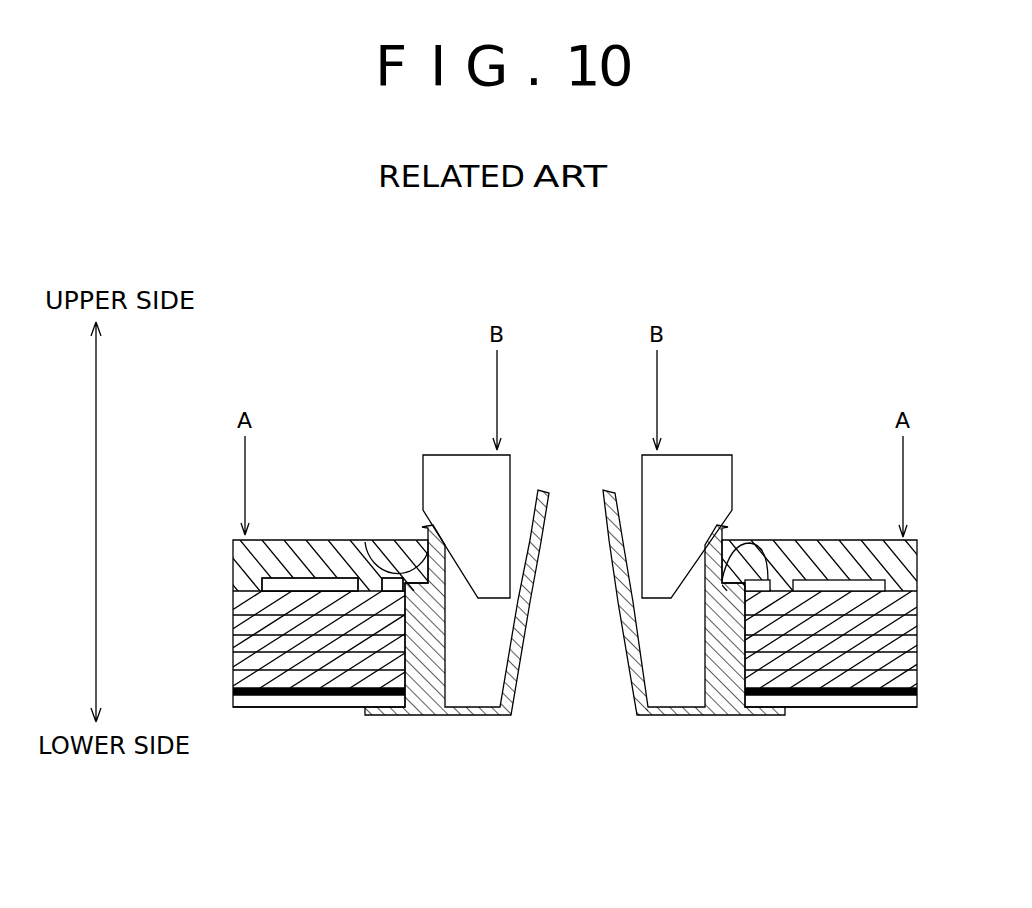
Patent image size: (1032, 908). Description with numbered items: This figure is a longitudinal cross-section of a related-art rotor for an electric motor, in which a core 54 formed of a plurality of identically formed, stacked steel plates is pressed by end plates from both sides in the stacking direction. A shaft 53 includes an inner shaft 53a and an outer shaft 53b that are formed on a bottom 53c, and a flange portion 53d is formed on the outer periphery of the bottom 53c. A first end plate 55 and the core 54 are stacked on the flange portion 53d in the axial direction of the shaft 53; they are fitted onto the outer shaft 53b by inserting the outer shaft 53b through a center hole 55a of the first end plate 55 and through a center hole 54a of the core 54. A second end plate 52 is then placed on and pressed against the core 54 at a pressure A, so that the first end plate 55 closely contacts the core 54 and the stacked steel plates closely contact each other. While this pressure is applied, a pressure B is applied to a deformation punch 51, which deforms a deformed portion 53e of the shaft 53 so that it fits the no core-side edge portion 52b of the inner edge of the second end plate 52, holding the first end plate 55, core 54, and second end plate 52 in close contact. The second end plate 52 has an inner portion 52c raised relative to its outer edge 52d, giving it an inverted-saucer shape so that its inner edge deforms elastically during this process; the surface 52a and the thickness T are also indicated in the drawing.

The deformation punch 51 is at (441, 468).
The second end plate 52 is at (299, 545).
The conductive layer 52a is at (358, 576).
The no core-side edge portion 52b is at (395, 560).
The inner portion 52c is at (237, 623).
The outer edge 52d is at (238, 580).
The terminal portion T is at (362, 550).
The shaft 53 is at (517, 680).
The inner shaft 53a is at (610, 575).
The outer shaft 53b is at (428, 680).
The bottom 53c is at (480, 716).
The flange portion 53d is at (375, 717).
The deformed portion 53e is at (427, 528).
The core 54 is at (230, 678).
The center hole 54a is at (757, 573).
The first end plate 55 is at (293, 708).
The center hole 55a is at (737, 714).